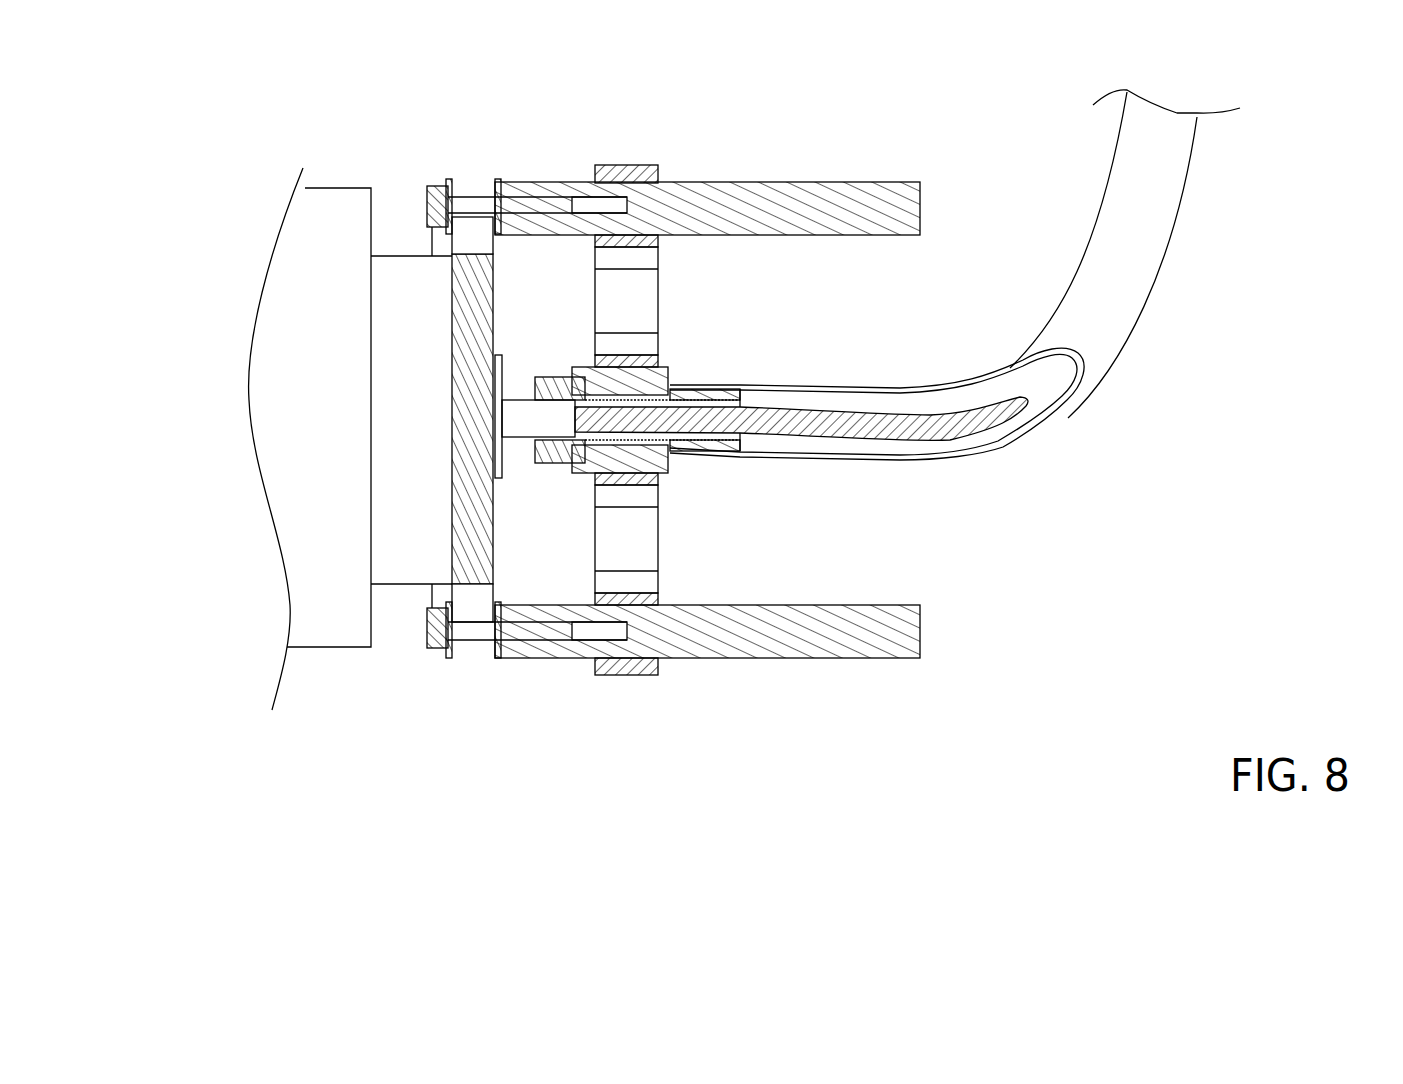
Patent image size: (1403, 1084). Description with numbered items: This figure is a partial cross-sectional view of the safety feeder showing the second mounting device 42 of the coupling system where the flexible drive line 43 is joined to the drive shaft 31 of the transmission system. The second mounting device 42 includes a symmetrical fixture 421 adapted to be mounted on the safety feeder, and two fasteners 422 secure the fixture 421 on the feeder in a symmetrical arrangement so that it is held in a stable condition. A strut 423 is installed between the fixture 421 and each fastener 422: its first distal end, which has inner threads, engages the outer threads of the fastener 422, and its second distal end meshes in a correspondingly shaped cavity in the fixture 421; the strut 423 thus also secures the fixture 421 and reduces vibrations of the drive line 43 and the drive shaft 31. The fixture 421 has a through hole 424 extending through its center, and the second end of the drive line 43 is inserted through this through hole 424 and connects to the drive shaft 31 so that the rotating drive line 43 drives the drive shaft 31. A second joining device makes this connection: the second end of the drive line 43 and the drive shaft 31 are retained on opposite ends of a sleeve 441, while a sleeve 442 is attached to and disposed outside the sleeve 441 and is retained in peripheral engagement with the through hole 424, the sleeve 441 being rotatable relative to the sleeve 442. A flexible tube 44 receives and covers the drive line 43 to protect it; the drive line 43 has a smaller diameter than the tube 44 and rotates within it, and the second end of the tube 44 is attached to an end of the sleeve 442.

The second mounting device 42 is at (707, 390).
The fixture 421 is at (630, 165).
The fastener 422 is at (471, 196).
The strut 423 is at (872, 184).
The through hole 424 is at (670, 458).
The sleeve 441 is at (563, 385).
The sleeve 442 is at (665, 366).
The drive shaft 31 is at (522, 417).
The drive line 43 is at (948, 441).
The tube 44 is at (1128, 318).